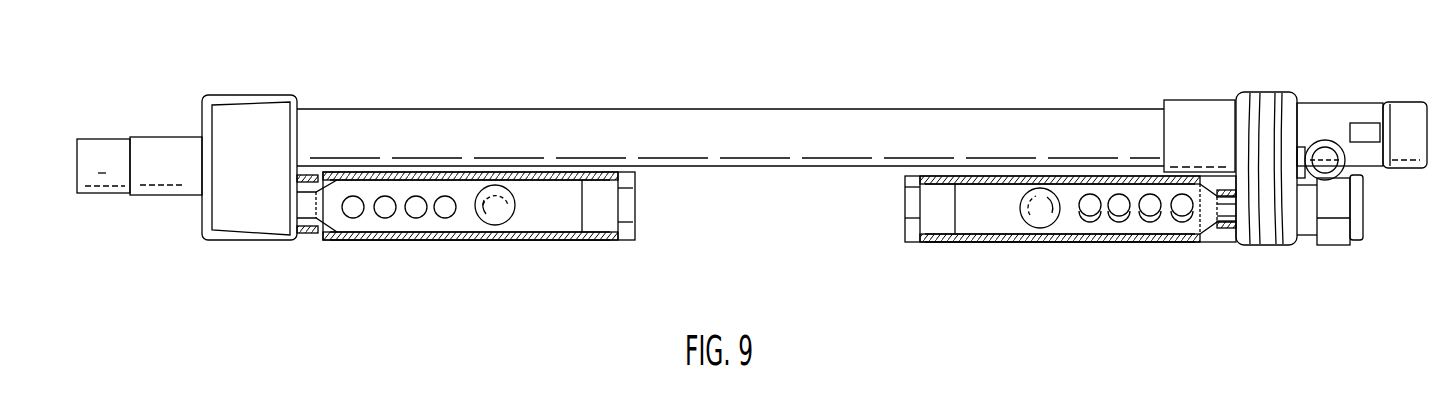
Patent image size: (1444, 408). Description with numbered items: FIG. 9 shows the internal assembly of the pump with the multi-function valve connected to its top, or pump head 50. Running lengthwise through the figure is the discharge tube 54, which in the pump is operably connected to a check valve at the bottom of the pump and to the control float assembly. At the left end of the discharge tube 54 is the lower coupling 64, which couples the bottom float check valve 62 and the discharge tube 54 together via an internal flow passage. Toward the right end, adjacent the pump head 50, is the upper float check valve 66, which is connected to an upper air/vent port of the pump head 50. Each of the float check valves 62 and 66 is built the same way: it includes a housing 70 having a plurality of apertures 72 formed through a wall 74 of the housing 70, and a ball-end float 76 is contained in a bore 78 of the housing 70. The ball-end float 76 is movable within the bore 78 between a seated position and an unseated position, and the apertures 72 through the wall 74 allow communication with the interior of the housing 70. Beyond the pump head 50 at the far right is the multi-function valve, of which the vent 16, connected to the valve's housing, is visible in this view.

The discharge tube 54 is at (715, 109).
The lower coupling 64 is at (240, 242).
The bottom float check valve 62 is at (625, 242).
The upper float check valve 66 is at (907, 243).
The apertures 72 is at (352, 218).
The ball-end float 76 is at (490, 226).
The wall 74 is at (500, 242).
The bore 78 is at (540, 242).
The housing 70 is at (583, 242).
The pump head 50 is at (1270, 245).
The vent 16 is at (1366, 223).